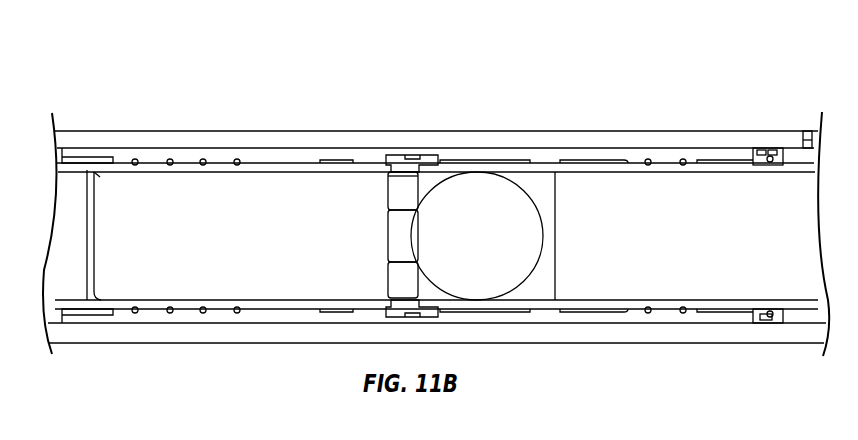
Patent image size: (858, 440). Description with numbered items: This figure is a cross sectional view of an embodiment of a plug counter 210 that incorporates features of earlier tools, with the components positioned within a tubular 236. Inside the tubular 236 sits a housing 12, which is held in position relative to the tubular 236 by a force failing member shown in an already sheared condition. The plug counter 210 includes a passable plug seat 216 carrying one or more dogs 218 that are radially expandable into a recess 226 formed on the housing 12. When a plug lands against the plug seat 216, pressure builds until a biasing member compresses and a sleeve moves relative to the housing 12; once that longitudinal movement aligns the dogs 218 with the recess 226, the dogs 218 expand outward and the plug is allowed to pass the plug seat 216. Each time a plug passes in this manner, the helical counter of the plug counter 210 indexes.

The plug counter 210 is at (692, 52).
The housing 12 is at (572, 129).
The tubular 236 is at (132, 129).
The recess 226 is at (428, 155).
The plug seat 216 is at (388, 186).
The dog 218 is at (388, 242).